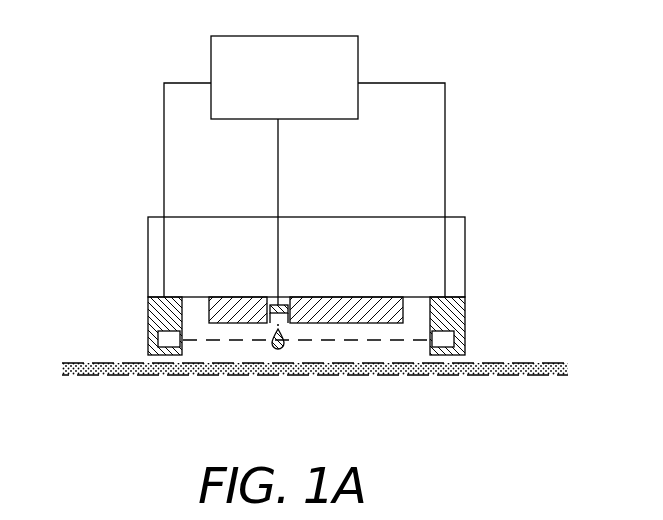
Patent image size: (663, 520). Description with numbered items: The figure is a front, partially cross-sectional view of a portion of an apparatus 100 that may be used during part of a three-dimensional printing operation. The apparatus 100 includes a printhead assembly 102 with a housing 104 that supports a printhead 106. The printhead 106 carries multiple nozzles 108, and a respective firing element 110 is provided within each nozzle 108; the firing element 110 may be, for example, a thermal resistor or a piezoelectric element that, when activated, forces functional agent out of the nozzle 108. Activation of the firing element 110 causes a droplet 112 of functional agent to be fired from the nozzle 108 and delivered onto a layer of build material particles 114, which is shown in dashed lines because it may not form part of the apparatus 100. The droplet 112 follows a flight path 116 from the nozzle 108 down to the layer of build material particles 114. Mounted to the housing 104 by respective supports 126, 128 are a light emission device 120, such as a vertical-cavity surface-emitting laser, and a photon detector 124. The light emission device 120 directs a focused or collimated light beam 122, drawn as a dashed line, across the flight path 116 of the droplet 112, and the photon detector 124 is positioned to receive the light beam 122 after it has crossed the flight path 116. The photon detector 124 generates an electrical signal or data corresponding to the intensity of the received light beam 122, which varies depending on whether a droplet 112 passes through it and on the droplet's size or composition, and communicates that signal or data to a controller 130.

The apparatus 100 is at (100, 31).
The printhead assembly 102 is at (120, 210).
The housing 104 is at (465, 263).
The printhead 106 is at (315, 297).
The nozzle 108 is at (265, 307).
The firing element 110 is at (262, 305).
The droplet 112 is at (284, 348).
The layer of build material particles 114 is at (492, 376).
The flight path 116 is at (276, 348).
The light emission device 120 is at (157, 340).
The light beam 122 is at (217, 341).
The photon detector 124 is at (455, 331).
The support 126 is at (150, 317).
The support 128 is at (464, 300).
The controller 130 is at (308, 88).